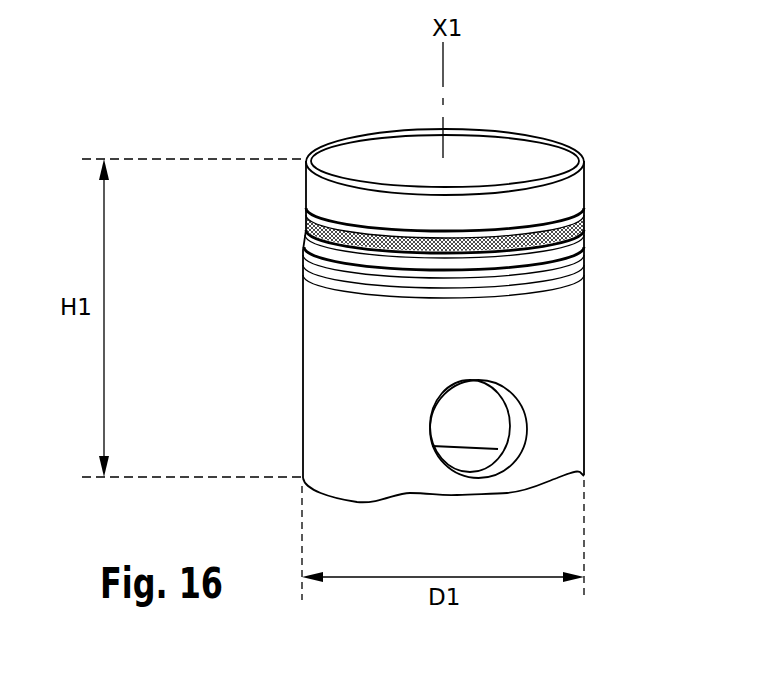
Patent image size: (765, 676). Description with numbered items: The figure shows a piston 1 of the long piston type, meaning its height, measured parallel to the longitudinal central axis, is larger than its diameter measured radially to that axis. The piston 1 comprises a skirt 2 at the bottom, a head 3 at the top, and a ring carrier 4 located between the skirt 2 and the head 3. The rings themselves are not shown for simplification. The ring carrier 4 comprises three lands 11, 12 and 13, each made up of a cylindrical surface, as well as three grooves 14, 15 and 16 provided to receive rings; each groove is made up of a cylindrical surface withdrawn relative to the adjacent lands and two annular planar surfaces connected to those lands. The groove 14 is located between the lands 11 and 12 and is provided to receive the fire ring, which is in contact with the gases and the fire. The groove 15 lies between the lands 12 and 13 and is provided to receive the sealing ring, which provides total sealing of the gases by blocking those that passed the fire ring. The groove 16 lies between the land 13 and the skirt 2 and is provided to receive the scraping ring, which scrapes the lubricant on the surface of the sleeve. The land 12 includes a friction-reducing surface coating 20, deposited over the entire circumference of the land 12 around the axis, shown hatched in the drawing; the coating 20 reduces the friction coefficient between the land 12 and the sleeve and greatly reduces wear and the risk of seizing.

The piston 1 is at (222, 95).
The skirt 2 is at (335, 391).
The head 3 is at (488, 158).
The ring carrier 4 is at (208, 205).
The land 11 is at (572, 192).
The land 12 is at (585, 217).
The land 13 is at (585, 236).
The groove 14 is at (290, 203).
The groove 15 is at (290, 221).
The groove 16 is at (292, 248).
The friction-reducing surface coating 20 is at (521, 258).